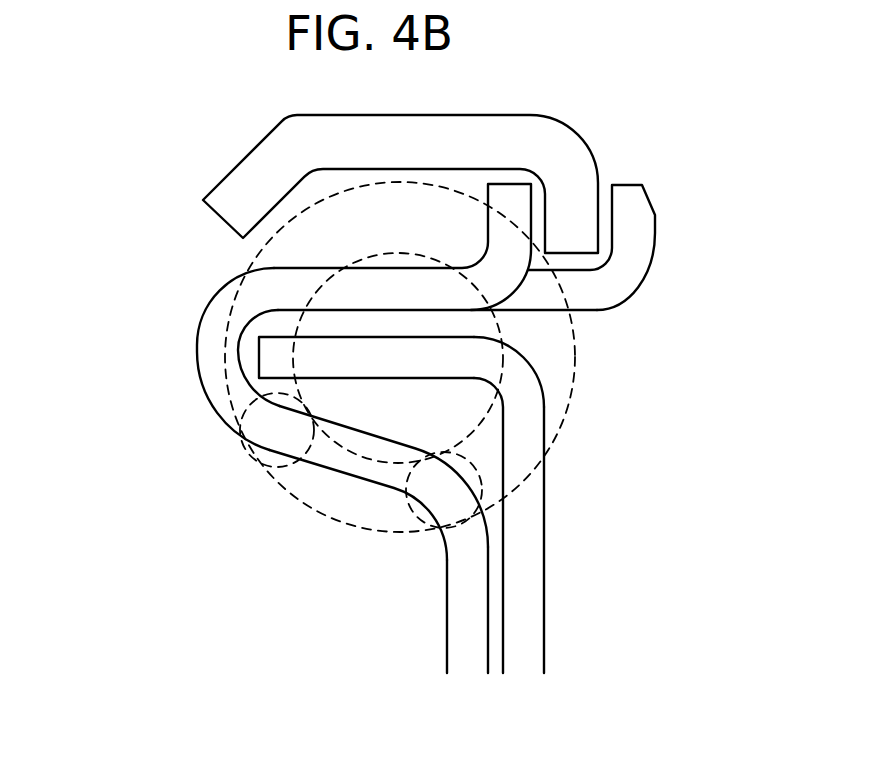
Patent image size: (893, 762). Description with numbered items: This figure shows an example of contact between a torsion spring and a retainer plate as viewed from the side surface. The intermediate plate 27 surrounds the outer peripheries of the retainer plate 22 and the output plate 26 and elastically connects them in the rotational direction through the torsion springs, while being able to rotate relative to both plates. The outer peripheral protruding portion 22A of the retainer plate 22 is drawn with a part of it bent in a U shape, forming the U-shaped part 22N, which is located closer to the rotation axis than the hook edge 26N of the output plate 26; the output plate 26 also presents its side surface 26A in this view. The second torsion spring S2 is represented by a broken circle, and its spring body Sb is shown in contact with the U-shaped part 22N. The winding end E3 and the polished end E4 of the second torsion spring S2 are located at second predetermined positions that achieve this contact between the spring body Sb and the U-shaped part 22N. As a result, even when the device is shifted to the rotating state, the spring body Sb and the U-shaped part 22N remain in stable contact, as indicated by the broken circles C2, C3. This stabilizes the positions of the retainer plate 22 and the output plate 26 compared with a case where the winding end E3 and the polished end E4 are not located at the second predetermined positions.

The intermediate plate 27 is at (252, 148).
The retainer plate 22 is at (356, 428).
The outer peripheral protruding portion 22A is at (198, 340).
The U-shaped part 22N is at (370, 470).
The output plate 26 is at (422, 505).
The hook edge 26N is at (278, 368).
The outer surface of support member 26A is at (546, 592).
The second torsion spring S2 is at (573, 392).
The winding end E3 is at (430, 258).
The polished end E4 is at (312, 299).
The broken circle C2 is at (483, 478).
The broken circle C3 is at (280, 462).
The spring body Sb is at (333, 467).